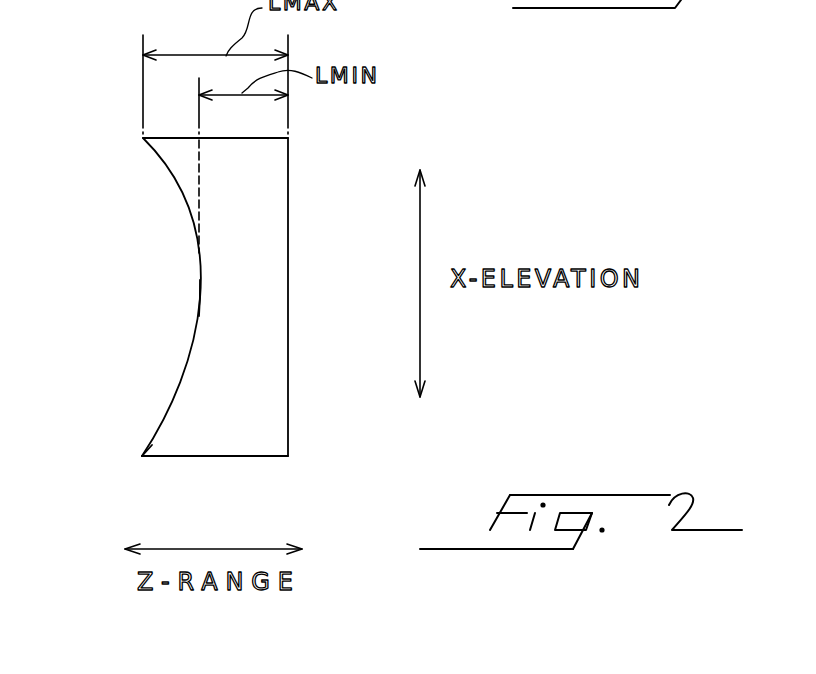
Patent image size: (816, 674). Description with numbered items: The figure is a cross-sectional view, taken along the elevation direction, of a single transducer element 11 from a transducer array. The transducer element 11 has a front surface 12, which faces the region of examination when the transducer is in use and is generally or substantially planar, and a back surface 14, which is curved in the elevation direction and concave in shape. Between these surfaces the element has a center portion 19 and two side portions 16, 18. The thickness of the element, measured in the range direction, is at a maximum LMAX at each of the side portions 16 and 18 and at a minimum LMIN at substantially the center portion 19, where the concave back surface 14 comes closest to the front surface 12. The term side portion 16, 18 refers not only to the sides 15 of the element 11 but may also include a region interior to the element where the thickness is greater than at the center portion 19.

The transducer element 11 is at (194, 327).
The front surface 12 is at (290, 320).
The back surface 14 is at (192, 348).
The side 15 is at (238, 456).
The side portion 16 is at (131, 173).
The side portion 18 is at (113, 407).
The center portion 19 is at (193, 301).